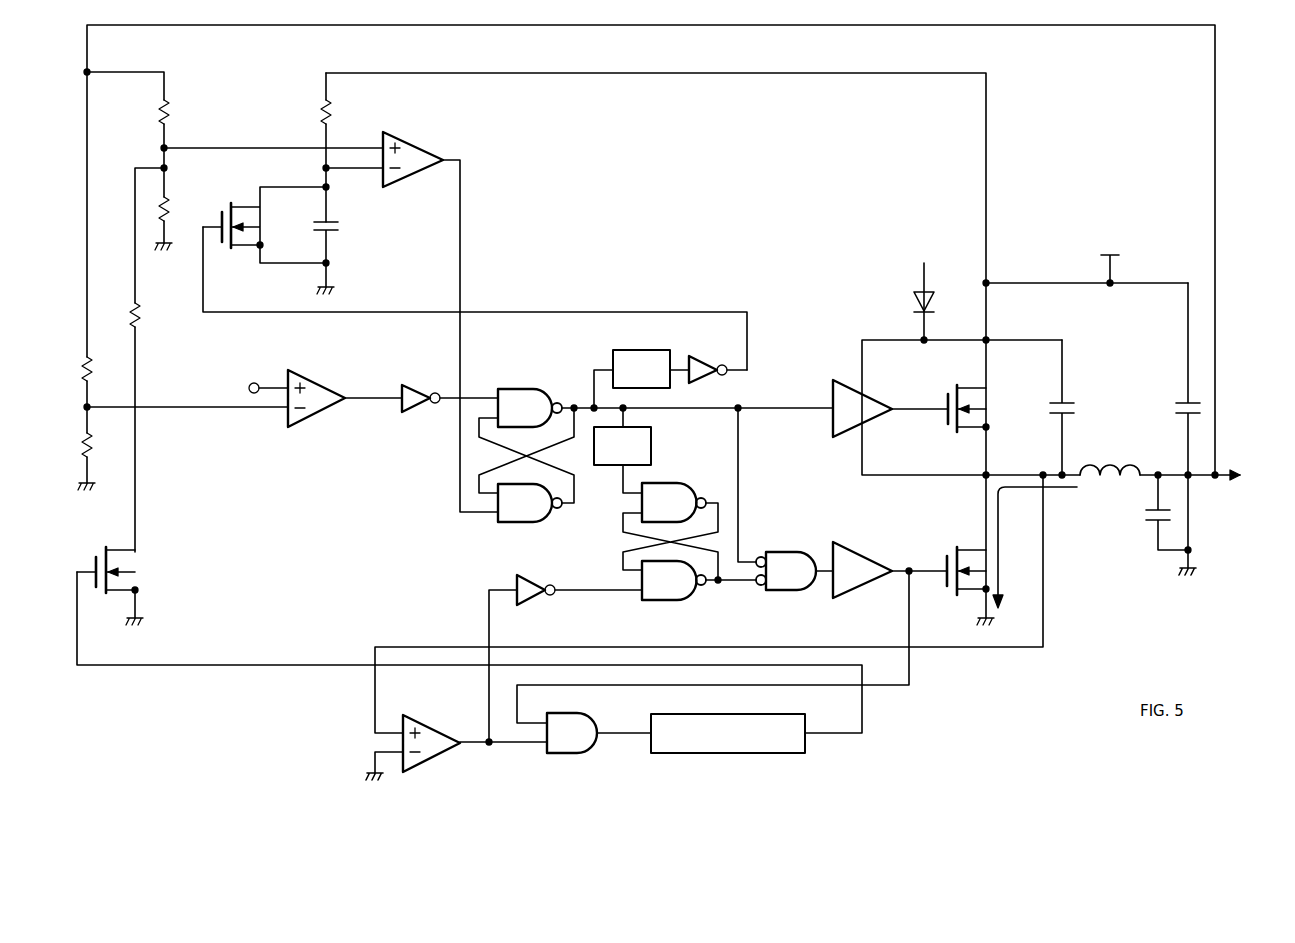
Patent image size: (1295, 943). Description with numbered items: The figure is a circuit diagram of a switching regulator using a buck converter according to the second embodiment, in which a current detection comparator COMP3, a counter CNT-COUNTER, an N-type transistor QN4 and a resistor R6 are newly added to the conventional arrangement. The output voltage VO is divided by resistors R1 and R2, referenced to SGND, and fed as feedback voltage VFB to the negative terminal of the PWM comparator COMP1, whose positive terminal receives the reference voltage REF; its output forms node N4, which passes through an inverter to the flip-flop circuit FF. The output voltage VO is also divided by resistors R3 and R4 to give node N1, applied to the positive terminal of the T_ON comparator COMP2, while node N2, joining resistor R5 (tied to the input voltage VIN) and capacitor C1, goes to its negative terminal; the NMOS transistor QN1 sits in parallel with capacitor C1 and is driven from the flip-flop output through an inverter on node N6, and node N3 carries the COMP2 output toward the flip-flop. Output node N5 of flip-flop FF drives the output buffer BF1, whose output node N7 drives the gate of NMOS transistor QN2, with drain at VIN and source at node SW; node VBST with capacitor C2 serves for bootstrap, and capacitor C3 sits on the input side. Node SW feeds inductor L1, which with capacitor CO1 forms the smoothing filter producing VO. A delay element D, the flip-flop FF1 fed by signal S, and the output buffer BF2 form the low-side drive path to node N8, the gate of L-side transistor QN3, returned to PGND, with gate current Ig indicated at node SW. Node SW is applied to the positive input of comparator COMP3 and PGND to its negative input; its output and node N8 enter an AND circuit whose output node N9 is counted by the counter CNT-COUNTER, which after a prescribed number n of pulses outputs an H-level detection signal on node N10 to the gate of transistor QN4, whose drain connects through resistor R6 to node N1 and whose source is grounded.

The output voltage VO is at (692, 268).
The input voltage VIN is at (1085, 259).
The feedback voltage VFB is at (187, 397).
The node for bootstrap VBST is at (971, 397).
The node SW is at (710, 593).
The reference voltage REF is at (251, 389).
The ground SGND is at (84, 497).
The ground potential PGND is at (778, 675).
The gate current Ig is at (1035, 547).
The set signal S is at (557, 658).
The delay element D is at (669, 421).
The resistor R1 is at (76, 369).
The resistor R2 is at (76, 445).
The resistor R3 is at (176, 112).
The resistor R4 is at (174, 221).
The resistor R5 is at (314, 120).
The resistor R6 is at (148, 315).
The capacitor C1 is at (337, 256).
The bootstrap capacitor C2 is at (1074, 409).
The input capacitor C3 is at (1175, 416).
The capacitor CO1 is at (1164, 512).
The inductor L1 is at (1110, 459).
The NMOS transistor QN1 is at (266, 226).
The NMOS transistor QN2 is at (986, 408).
The L-side transistor QN3 is at (968, 574).
The N-type transistor QN4 is at (125, 586).
The PWM comparator COMP1 is at (316, 387).
The T_ON comparator COMP2 is at (413, 150).
The current detection comparator COMP3 is at (474, 734).
The output buffer BF1 is at (856, 398).
The output buffer BF2 is at (862, 560).
The flip-flop circuit FF is at (536, 443).
The flip-flop FF1 is at (728, 554).
The counter CNT-COUNTER is at (728, 733).
The node N1 is at (273, 138).
The node N2 is at (353, 193).
The node N3 is at (470, 336).
The node N4 is at (421, 395).
The output node N5 is at (713, 475).
The node N6 is at (475, 298).
The output node N7 is at (920, 398).
The node N8 is at (732, 636).
The node N9 is at (599, 733).
The node N10 is at (469, 652).